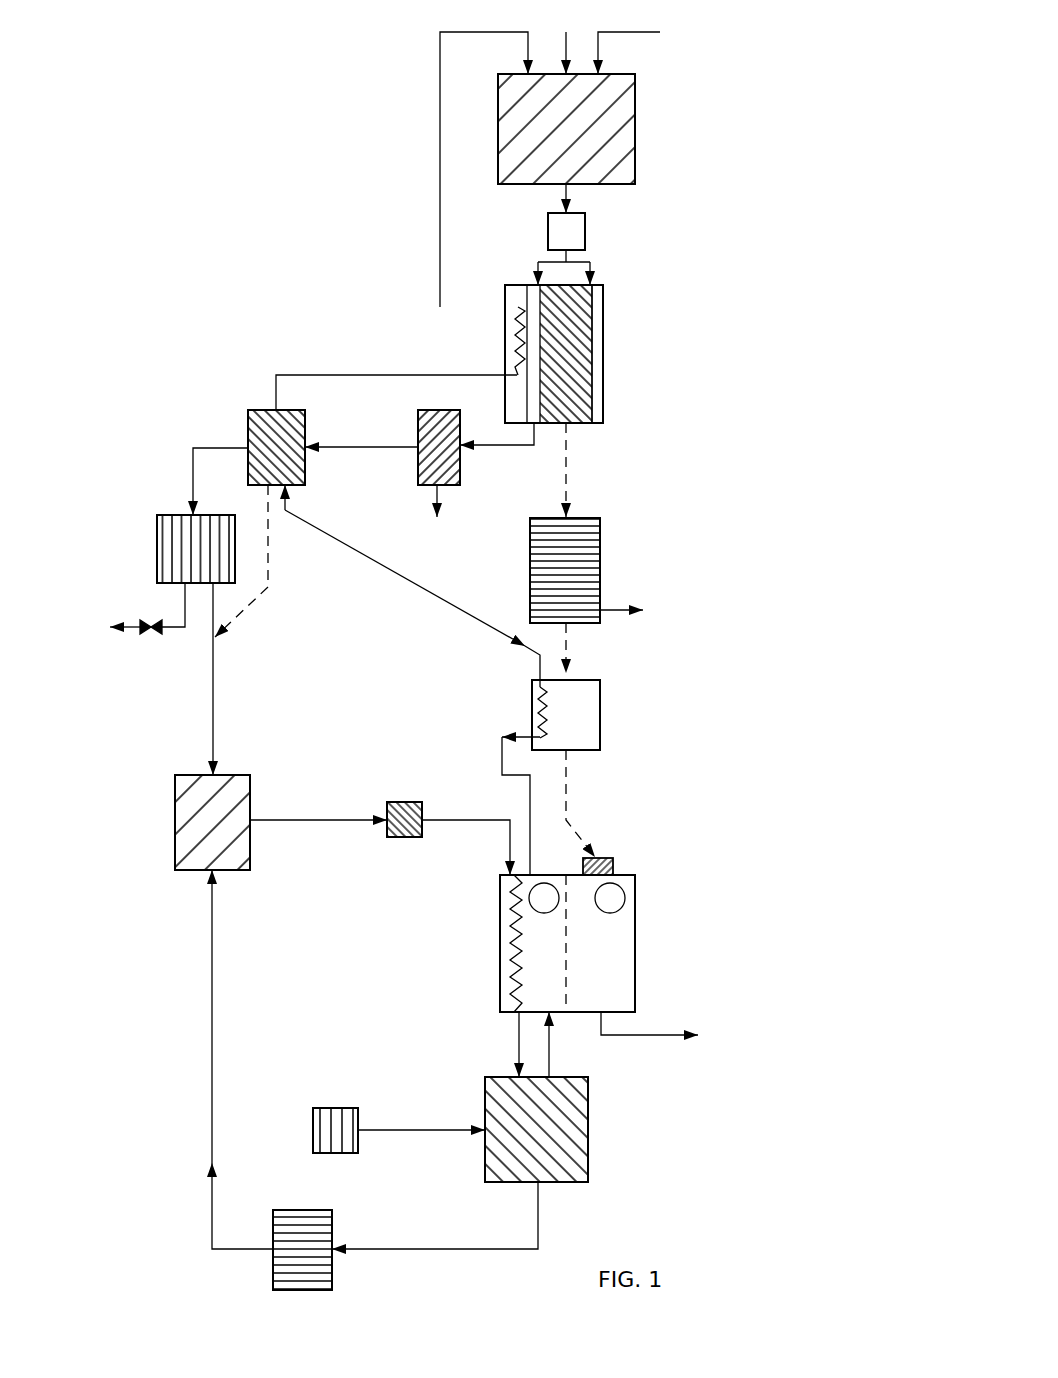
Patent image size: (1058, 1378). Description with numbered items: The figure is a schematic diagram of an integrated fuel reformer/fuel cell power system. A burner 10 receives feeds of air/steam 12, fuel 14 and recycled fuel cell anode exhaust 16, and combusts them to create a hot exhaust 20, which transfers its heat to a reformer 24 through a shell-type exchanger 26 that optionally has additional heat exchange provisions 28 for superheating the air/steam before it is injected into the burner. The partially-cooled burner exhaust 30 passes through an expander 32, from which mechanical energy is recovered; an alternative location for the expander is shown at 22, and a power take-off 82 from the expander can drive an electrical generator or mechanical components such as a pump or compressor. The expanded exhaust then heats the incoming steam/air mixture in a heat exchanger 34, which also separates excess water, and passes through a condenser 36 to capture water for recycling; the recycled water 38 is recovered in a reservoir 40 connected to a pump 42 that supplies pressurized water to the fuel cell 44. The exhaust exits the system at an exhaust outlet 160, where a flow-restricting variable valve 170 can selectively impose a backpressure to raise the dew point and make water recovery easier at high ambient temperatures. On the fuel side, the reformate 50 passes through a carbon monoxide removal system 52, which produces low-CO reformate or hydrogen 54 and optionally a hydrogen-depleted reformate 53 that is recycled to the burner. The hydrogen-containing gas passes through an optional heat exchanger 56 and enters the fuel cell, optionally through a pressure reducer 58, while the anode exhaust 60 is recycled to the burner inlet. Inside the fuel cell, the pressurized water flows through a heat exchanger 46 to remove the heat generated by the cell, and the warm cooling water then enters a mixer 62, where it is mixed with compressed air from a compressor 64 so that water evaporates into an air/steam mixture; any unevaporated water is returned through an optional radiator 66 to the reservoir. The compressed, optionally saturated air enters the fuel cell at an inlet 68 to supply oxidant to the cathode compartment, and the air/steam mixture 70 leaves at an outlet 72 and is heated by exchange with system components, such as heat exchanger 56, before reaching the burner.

The burner 10 is at (635, 125).
The air/steam feed 12 is at (490, 31).
The fuel feed 14 is at (580, 27).
The recycled fuel cell anode exhaust 16 is at (688, 42).
The hot exhaust 20 is at (566, 191).
The alternative expander location 22 is at (585, 230).
The reformer 24 is at (585, 340).
The shell-type heat exchanger 26 is at (603, 424).
The additional heat exchange provisions 28 is at (505, 292).
The partially-cooled burner exhaust 30 is at (490, 445).
The expander 32 is at (418, 425).
The heat exchanger 34 is at (262, 410).
The condenser 36 is at (157, 530).
The recycled water 38 is at (214, 700).
The reservoir 40 is at (175, 820).
The pump 42 is at (400, 802).
The fuel cell 44 is at (635, 975).
The heat exchanger 46 is at (512, 947).
The reformate 50 is at (566, 485).
The carbon monoxide removal system 52 is at (600, 560).
The hydrogen-depleted reformate 53 is at (677, 624).
The low-CO reformate or hydrogen 54 is at (566, 655).
The heat exchanger 56 is at (600, 735).
The pressure reducer 58 is at (613, 862).
The anode exhaust 60 is at (645, 1035).
The mixer 62 is at (485, 1090).
The compressor 64 is at (338, 1108).
The radiator 66 is at (298, 1210).
The inlet 68 is at (562, 1013).
The air/steam mixture 70 is at (476, 622).
The outlet 72 is at (522, 870).
The power take-off 82 is at (437, 495).
The exhaust outlet 160 is at (107, 632).
The flow-restricting variable valve 170 is at (145, 620).